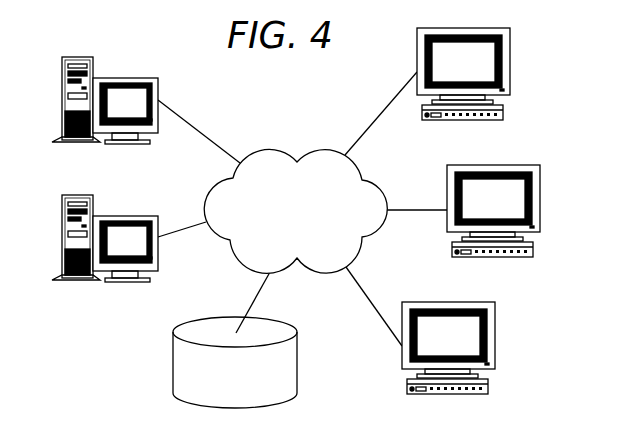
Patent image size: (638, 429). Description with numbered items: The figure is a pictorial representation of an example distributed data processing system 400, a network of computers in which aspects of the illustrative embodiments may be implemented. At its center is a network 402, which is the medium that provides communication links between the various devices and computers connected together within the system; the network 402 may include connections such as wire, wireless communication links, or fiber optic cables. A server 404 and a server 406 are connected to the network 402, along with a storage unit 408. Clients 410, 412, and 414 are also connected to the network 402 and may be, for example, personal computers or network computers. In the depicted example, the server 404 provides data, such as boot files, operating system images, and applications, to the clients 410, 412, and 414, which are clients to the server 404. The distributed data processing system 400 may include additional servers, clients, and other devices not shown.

The distributed data processing system 400 is at (134, 346).
The network 402 is at (265, 149).
The server 404 is at (123, 78).
The server 406 is at (123, 216).
The storage unit 408 is at (297, 355).
The client 410 is at (510, 67).
The client 412 is at (540, 203).
The client 414 is at (495, 340).